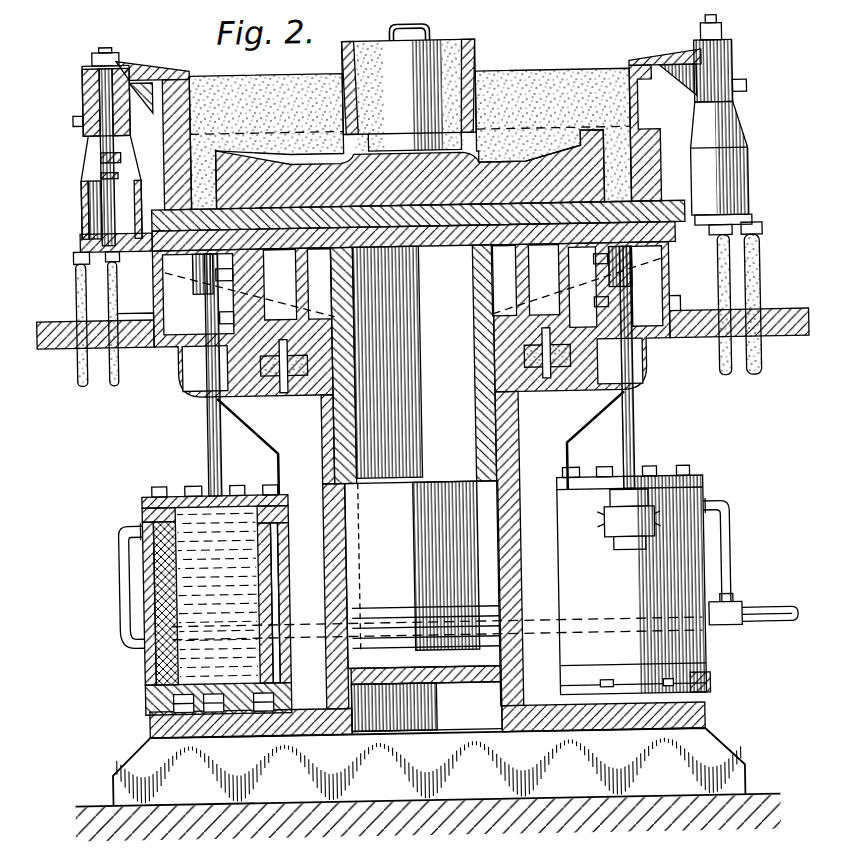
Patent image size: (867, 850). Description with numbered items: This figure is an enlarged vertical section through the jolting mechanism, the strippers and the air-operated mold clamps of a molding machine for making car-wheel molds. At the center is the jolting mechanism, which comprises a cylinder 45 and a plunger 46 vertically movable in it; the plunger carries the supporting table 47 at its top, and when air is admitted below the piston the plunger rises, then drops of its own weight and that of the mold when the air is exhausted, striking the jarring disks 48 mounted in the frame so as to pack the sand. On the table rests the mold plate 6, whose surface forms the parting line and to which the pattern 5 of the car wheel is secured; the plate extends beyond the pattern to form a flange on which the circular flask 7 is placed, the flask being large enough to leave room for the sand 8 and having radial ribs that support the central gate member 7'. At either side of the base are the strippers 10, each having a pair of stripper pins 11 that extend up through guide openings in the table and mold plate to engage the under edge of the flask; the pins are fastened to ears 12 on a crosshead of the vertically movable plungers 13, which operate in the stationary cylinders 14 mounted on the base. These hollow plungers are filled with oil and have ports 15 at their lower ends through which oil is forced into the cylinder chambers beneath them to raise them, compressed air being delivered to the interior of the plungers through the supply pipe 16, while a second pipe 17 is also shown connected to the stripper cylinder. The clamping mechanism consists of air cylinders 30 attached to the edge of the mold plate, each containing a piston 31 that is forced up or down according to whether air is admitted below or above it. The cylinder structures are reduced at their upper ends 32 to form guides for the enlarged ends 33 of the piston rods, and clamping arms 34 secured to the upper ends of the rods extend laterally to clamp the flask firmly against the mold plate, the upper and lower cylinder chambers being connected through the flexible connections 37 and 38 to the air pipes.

The pattern 5 is at (552, 62).
The mold plate 6 is at (545, 202).
The flask 7 is at (416, 129).
The central gate member 7' is at (424, 87).
The sand 8 is at (565, 85).
The stripper 10 is at (752, 501).
The stripper pins 11 is at (168, 432).
The ears 12 is at (612, 533).
The plungers 13 is at (100, 584).
The cylinders 14 is at (110, 657).
The ports 15 is at (242, 759).
The supply pipe 16 is at (95, 597).
The upper pipe 17 is at (104, 557).
The air cylinders 30 is at (148, 178).
The pistons 31 is at (58, 211).
The upper ends of cylinder structures 32 is at (162, 40).
The enlarged ends of piston rods 33 is at (110, 91).
The clamping arms 34 is at (198, 45).
The flexible connection 37 is at (116, 296).
The flexible connection 38 is at (84, 287).
The cylinder 45 is at (560, 438).
The plunger 46 is at (467, 437).
The supporting table 47 is at (462, 280).
The jarring disks 48 is at (455, 410).